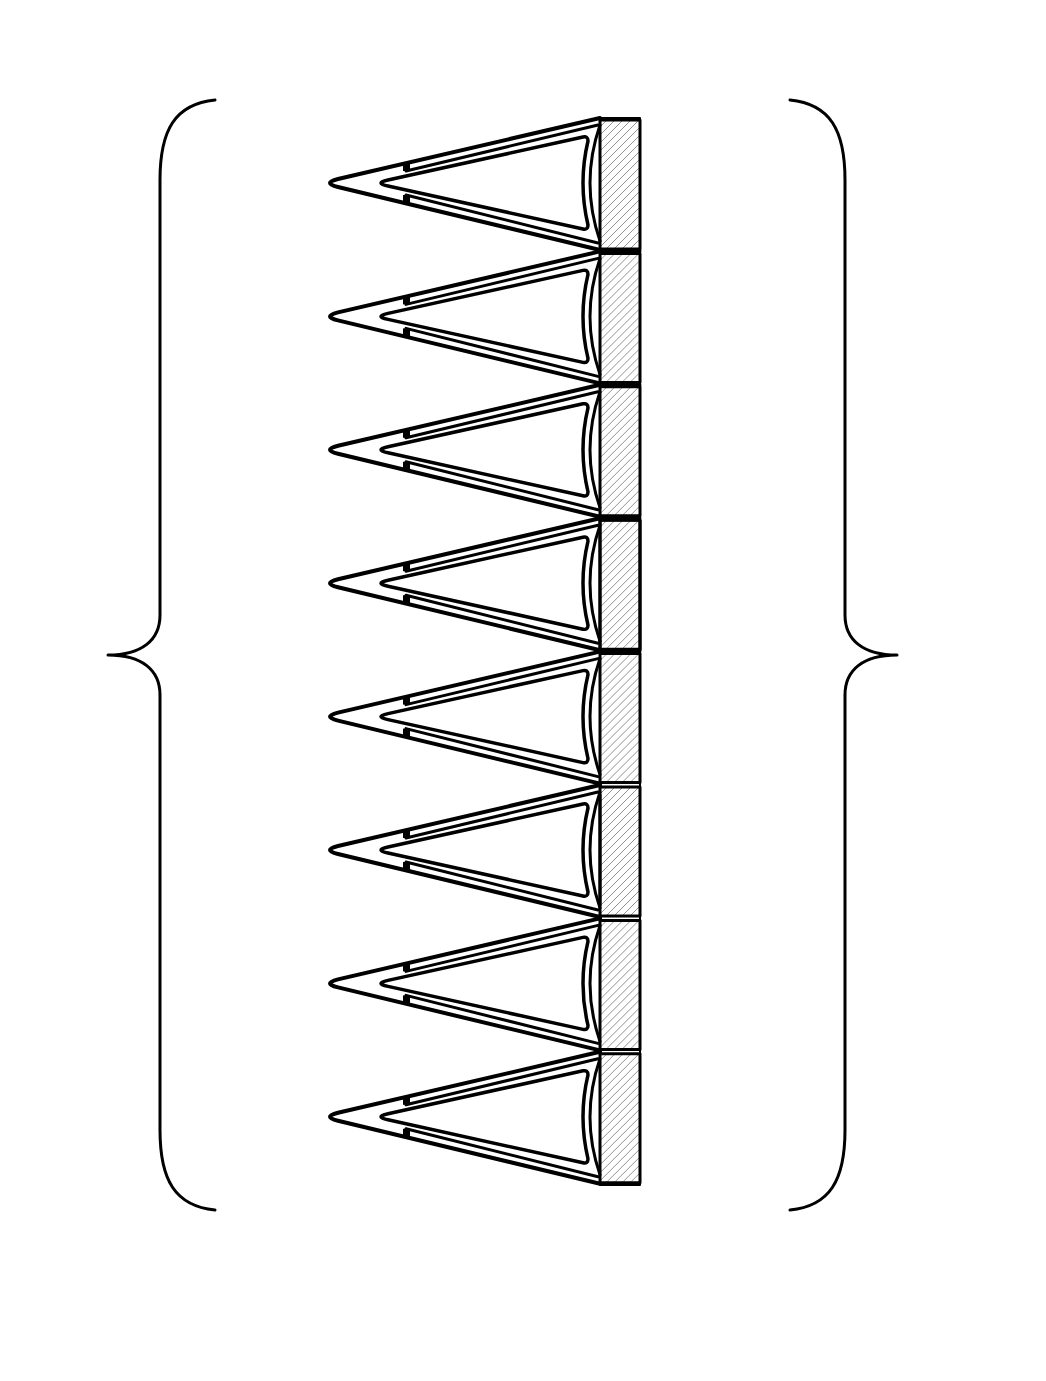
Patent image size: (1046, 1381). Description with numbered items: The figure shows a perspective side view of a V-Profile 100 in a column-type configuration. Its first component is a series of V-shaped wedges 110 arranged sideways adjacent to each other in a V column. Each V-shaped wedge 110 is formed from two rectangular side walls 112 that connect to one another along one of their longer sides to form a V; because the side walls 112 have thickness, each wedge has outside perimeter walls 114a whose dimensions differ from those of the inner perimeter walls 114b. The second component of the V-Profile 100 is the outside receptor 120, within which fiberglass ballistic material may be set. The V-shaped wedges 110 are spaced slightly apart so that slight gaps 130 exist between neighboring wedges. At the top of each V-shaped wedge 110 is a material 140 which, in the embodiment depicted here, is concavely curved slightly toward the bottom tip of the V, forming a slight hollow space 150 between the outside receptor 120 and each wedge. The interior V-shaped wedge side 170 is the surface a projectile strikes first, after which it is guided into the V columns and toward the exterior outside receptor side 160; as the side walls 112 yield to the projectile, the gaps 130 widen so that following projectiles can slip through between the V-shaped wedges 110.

The V-Profile 100 is at (426, 24).
The V-shaped wedge 110 is at (457, 620).
The rectangular side wall 112 is at (404, 163).
The outside perimeter wall 114a is at (527, 134).
The inner perimeter wall 114b is at (545, 218).
The outside receptor 120 is at (646, 716).
The gap 130 is at (646, 515).
The material at the top of the V-shaped wedge 140 is at (580, 851).
The hollow space 150 is at (600, 850).
The outside receptor side 160 is at (866, 655).
The V-shaped wedge side 170 is at (137, 655).